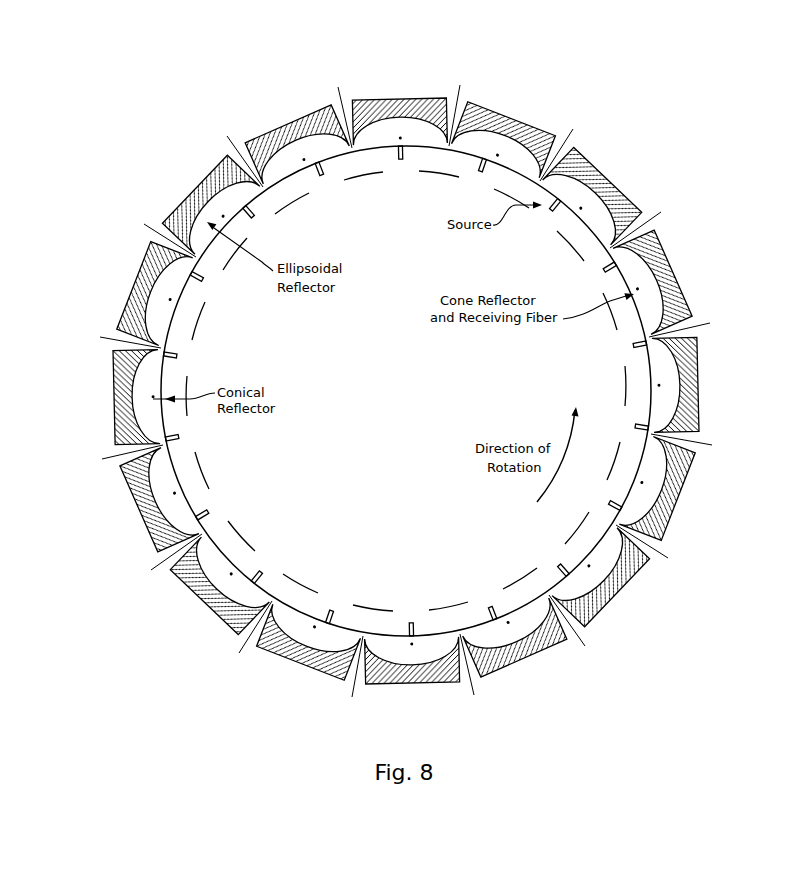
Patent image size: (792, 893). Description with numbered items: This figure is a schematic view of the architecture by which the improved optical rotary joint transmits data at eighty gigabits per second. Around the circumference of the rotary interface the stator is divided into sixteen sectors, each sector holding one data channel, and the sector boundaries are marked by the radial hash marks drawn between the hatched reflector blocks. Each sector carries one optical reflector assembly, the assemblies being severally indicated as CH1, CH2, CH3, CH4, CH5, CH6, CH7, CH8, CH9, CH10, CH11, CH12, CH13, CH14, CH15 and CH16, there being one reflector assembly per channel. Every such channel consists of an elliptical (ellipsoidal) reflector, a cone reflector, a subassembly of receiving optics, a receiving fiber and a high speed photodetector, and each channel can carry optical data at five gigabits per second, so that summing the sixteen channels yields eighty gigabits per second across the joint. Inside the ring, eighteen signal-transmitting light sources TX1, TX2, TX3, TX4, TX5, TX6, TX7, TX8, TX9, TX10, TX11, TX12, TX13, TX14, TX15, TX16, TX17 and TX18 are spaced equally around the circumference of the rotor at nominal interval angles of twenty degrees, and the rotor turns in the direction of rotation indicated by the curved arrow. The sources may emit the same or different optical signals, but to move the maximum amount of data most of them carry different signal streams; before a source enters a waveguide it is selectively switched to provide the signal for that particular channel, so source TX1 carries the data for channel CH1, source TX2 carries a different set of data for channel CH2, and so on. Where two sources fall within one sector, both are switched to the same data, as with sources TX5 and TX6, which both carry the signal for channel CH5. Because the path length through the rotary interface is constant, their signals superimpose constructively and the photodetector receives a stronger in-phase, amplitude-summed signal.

The optical reflector assembly CH1 is at (399, 105).
The optical reflector assembly CH2 is at (504, 132).
The optical reflector assembly CH3 is at (592, 195).
The optical reflector assembly CH4 is at (663, 282).
The optical reflector assembly CH5 is at (695, 384).
The optical reflector assembly CH6 is at (668, 489).
The optical reflector assembly CH7 is at (600, 577).
The optical reflector assembly CH8 is at (515, 644).
The optical reflector assembly CH9 is at (412, 678).
The optical reflector assembly CH10 is at (309, 651).
The optical reflector assembly CH11 is at (218, 585).
The optical reflector assembly CH12 is at (147, 500).
The optical reflector assembly CH13 is at (114, 397).
The optical reflector assembly CH14 is at (141, 294).
The optical reflector assembly CH15 is at (207, 204).
The optical reflector assembly CH16 is at (297, 137).
The signal-transmitting light source TX1 is at (400, 161).
The signal-transmitting light source TX2 is at (476, 173).
The signal-transmitting light source TX3 is at (545, 212).
The signal-transmitting light source TX4 is at (597, 272).
The signal-transmitting light source TX5 is at (625, 347).
The signal-transmitting light source TX6 is at (626, 425).
The signal-transmitting light source TX7 is at (601, 501).
The signal-transmitting light source TX8 is at (553, 563).
The signal-transmitting light source TX9 is at (486, 605).
The signal-transmitting light source TX10 is at (410, 621).
The signal-transmitting light source TX11 is at (334, 609).
The signal-transmitting light source TX12 is at (266, 570).
The signal-transmitting light source TX13 is at (215, 509).
The signal-transmitting light source TX14 is at (188, 435).
The signal-transmitting light source TX15 is at (188, 357).
The signal-transmitting light source TX16 is at (210, 282).
The signal-transmitting light source TX17 is at (259, 219).
The signal-transmitting light source TX18 is at (324, 176).